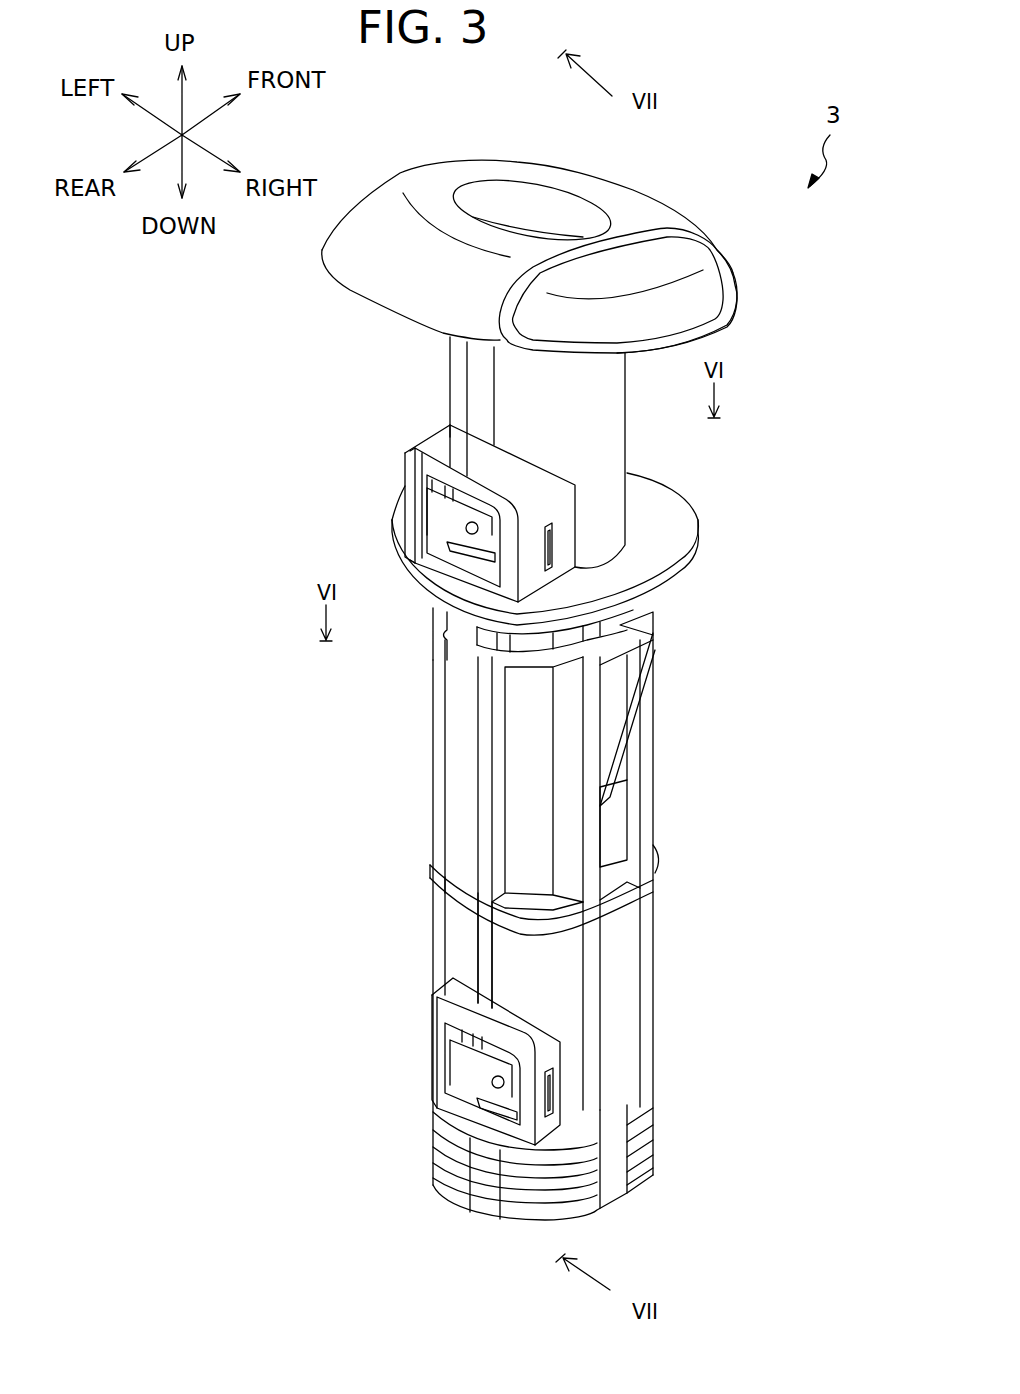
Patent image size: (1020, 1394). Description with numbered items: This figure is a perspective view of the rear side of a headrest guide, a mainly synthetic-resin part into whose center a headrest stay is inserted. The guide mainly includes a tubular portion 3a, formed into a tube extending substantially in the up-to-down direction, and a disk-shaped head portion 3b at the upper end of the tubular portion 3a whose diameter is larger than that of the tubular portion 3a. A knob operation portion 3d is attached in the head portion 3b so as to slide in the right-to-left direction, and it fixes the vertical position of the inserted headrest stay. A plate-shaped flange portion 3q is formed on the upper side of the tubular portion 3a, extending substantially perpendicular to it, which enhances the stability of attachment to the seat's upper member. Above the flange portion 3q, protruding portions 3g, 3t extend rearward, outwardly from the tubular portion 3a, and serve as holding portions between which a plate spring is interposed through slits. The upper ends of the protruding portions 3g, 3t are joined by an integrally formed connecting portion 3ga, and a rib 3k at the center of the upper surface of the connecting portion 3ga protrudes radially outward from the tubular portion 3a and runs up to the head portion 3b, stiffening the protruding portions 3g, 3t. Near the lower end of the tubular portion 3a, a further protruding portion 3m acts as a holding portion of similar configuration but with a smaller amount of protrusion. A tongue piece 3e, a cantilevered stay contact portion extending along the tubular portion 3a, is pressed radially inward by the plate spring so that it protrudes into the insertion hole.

The tubular portion 3a is at (615, 440).
The head portion 3b is at (442, 172).
The knob operation portion 3d is at (722, 284).
The tongue piece 3e is at (412, 483).
The protruding portion 3g is at (565, 567).
The connecting portion 3ga is at (437, 443).
The rib 3k is at (455, 362).
The protruding portion 3m is at (438, 1087).
The flange portion 3q is at (680, 520).
The protruding portion 3t is at (410, 485).